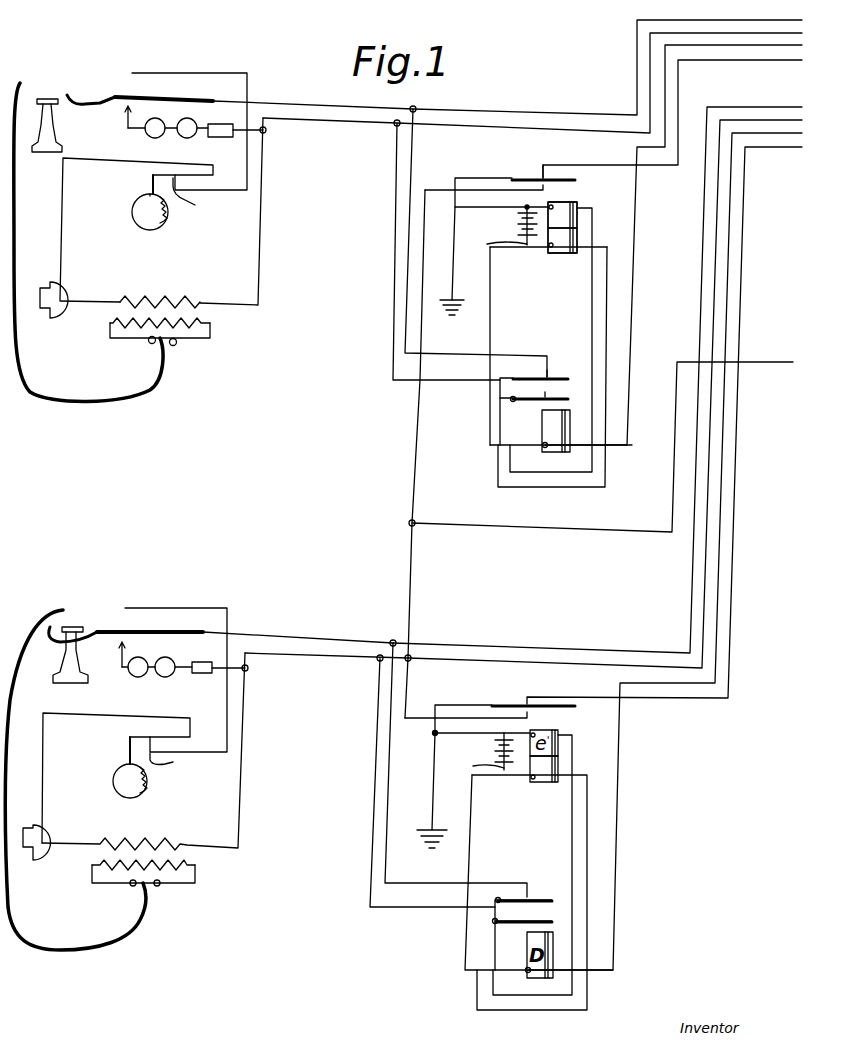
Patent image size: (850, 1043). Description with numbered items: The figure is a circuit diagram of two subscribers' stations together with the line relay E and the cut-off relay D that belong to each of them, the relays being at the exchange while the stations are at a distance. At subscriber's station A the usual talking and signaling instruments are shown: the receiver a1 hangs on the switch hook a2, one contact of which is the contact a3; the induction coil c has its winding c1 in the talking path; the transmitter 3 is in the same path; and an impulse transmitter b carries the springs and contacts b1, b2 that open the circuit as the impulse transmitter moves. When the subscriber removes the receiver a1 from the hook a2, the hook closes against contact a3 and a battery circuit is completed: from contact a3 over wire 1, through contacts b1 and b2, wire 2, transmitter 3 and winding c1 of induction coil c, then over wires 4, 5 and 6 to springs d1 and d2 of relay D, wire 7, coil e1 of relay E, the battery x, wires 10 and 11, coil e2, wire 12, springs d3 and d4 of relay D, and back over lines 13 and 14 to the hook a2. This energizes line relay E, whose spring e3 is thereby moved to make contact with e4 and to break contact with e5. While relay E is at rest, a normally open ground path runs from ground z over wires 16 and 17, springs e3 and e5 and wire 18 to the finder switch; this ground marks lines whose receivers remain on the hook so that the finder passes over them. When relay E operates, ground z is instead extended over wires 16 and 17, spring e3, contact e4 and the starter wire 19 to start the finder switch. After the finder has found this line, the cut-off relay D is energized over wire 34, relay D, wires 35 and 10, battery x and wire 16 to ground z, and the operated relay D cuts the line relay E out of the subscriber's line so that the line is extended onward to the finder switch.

The wire 1 is at (226, 80).
The wire 2 is at (140, 158).
The transmitter 3 is at (80, 296).
The wire 4 is at (258, 274).
The wire 5 is at (339, 123).
The wire 6 is at (392, 174).
The wire 7 is at (593, 236).
The wire 10 is at (498, 238).
The wire 11 is at (537, 249).
The wire 12 is at (607, 348).
The line 13 is at (461, 360).
The line 14 is at (336, 101).
The wire 16 is at (453, 275).
The wire 17 is at (477, 184).
The wire 18 is at (772, 62).
The starter wire 19 is at (781, 366).
The wire 34 is at (786, 52).
The wire 35 is at (490, 334).
The receiver a1 is at (57, 124).
The switch hook a2 is at (112, 97).
The switch-hook contact a3 is at (131, 96).
The impulse transmitter b is at (133, 212).
The spring and contact b1 is at (191, 198).
The spring and contact b2 is at (148, 181).
The induction coil c is at (203, 322).
The induction coil winding c1 is at (170, 302).
The relay spring d1 is at (568, 399).
The relay spring d2 is at (541, 386).
The relay spring d3 is at (544, 376).
The relay spring d4 is at (540, 370).
The relay coil e1 is at (562, 215).
The relay coil e2 is at (562, 240).
The relay spring e3 is at (578, 180).
The relay contact e4 is at (548, 190).
The relay contact e5 is at (541, 176).
The battery x is at (517, 225).
The ground z is at (452, 318).
The subscriber's station A is at (180, 215).
The cut-off relay D is at (561, 431).
The line relay E is at (558, 240).